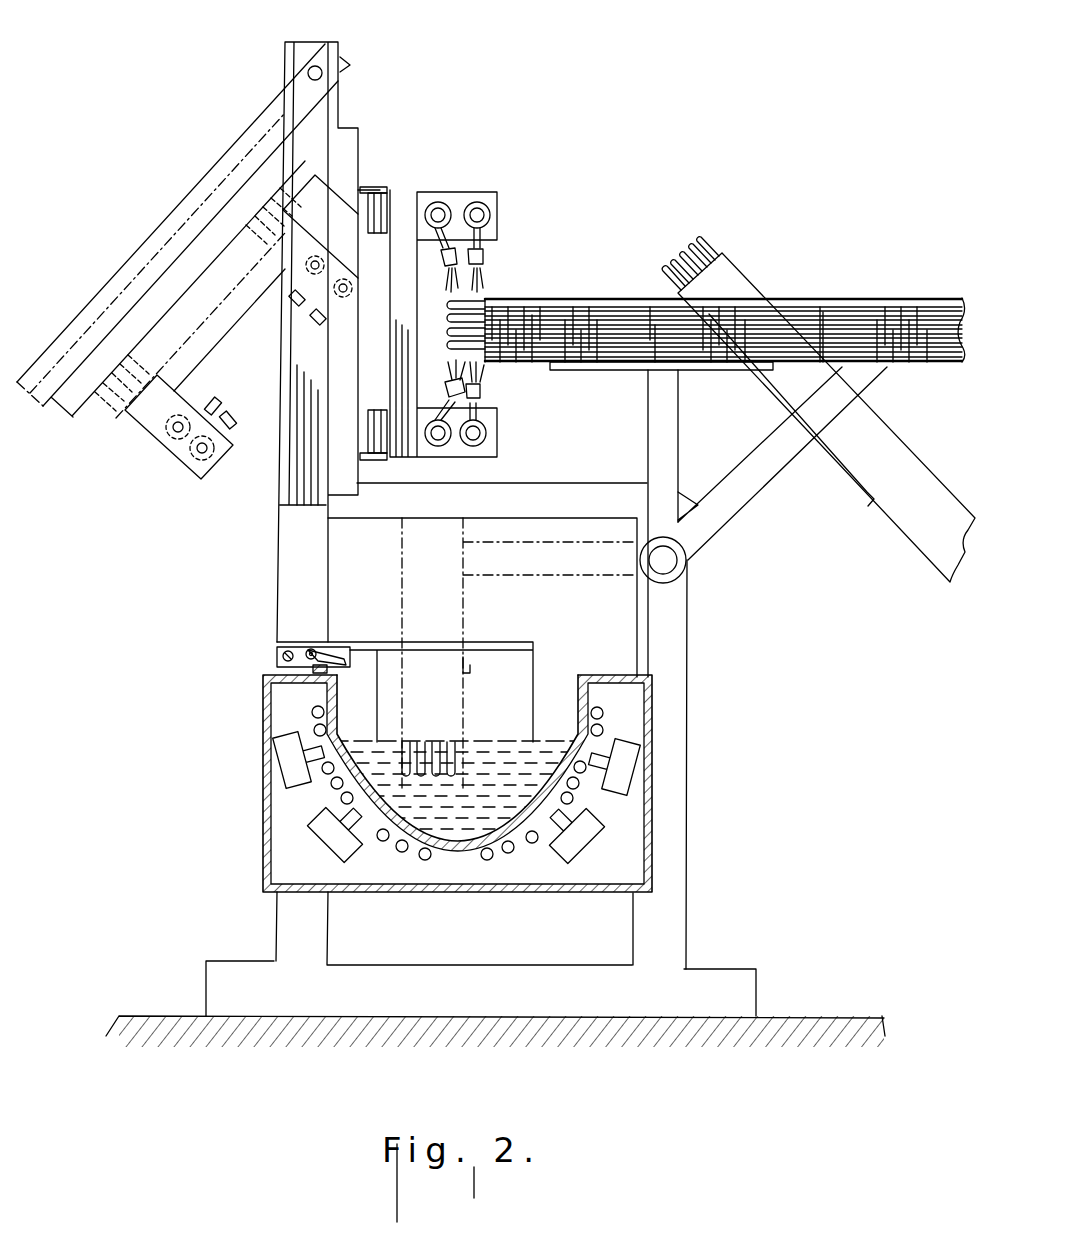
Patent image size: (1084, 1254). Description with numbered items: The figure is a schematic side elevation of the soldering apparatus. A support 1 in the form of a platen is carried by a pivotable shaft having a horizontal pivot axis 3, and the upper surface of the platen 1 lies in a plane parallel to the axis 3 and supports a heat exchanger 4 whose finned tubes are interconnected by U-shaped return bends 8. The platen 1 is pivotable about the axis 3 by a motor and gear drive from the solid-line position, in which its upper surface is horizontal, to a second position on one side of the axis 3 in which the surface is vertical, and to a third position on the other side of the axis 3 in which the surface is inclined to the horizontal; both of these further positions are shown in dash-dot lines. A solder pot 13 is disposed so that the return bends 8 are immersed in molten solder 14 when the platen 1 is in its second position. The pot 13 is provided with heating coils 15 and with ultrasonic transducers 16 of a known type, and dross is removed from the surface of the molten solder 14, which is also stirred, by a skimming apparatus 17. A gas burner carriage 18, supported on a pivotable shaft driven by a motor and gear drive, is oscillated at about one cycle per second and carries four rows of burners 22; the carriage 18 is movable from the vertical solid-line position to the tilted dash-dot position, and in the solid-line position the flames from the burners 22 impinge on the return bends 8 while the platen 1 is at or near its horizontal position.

The support 1 is at (470, 612).
The horizontal pivot axis 3 is at (665, 560).
The heat exchanger 4 is at (578, 295).
The return bends 8 is at (447, 347).
The solder pot 13 is at (590, 678).
The molten solder 14 is at (543, 748).
The heating coils 15 is at (604, 714).
The ultrasonic transducers 16 is at (303, 787).
The skimming apparatus 17 is at (270, 655).
The gas burner carriage 18 is at (350, 290).
The burners 22 is at (483, 262).